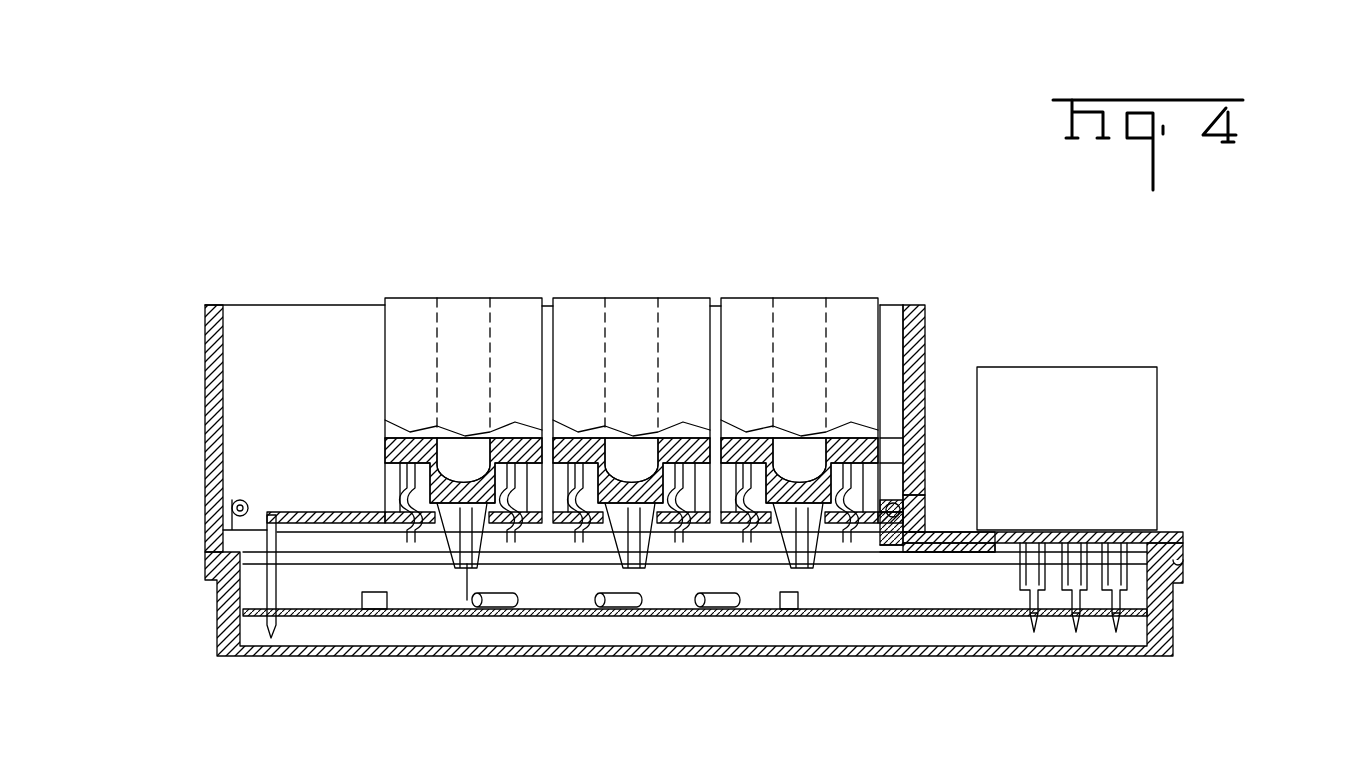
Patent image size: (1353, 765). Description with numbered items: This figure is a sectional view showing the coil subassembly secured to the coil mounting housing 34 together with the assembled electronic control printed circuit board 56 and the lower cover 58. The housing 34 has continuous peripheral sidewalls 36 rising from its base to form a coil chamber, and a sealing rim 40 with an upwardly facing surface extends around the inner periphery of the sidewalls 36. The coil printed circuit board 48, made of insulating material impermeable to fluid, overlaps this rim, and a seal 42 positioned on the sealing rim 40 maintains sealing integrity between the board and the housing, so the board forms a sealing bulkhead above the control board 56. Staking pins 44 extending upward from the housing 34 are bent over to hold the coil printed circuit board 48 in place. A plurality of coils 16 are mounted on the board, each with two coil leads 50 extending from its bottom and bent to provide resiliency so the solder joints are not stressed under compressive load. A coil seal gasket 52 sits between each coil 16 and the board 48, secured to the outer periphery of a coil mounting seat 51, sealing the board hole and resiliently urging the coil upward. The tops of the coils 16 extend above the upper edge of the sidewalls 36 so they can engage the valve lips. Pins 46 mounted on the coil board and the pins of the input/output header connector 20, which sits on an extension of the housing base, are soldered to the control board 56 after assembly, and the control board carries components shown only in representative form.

The coils 16 is at (768, 304).
The pin header connector 20 is at (1132, 413).
The coil mounting housing 34 is at (907, 292).
The sidewalls 36 is at (925, 340).
The sealing rim 40 is at (882, 532).
The seal 42 is at (897, 548).
The staking pins 44 is at (238, 503).
The pins 46 is at (268, 578).
The coil printed circuit board 48 is at (330, 509).
The coil leads 50 is at (385, 472).
The coil mounting seat 51 is at (873, 466).
The coil seal gasket 52 is at (905, 503).
The electronic control printed circuit board 56 is at (870, 622).
The lower cover 58 is at (1165, 620).